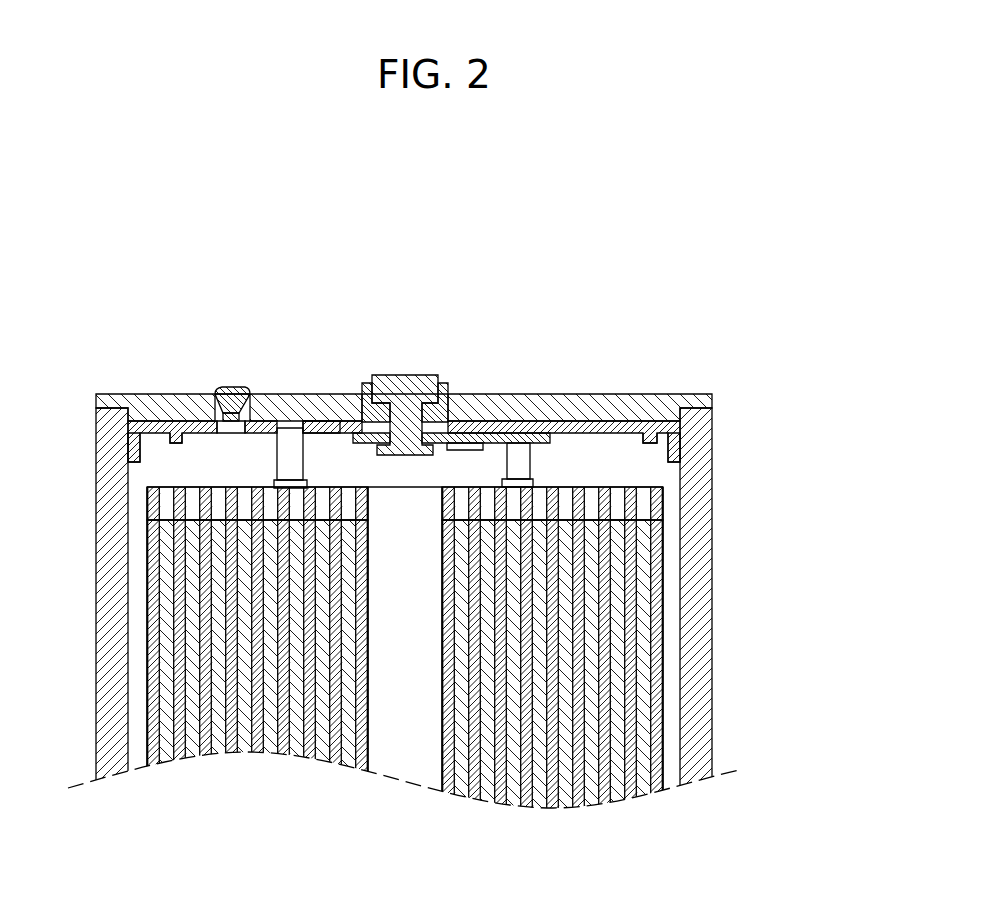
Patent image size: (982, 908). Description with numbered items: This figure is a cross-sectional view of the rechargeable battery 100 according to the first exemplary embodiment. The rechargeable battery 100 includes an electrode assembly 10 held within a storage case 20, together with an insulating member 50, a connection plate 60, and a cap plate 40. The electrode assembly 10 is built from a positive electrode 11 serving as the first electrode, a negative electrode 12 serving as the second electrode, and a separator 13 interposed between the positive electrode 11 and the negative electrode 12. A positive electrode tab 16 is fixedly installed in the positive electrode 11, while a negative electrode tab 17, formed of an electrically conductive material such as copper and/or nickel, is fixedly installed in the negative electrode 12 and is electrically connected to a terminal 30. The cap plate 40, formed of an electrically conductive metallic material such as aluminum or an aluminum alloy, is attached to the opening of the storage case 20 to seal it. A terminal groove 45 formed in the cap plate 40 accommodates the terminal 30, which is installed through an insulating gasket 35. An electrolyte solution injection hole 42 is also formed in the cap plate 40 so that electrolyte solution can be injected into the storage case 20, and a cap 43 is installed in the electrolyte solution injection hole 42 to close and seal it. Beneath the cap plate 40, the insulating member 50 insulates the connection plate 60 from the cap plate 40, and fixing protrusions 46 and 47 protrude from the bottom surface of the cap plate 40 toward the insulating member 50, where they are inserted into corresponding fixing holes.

The rechargeable battery 100 is at (387, 211).
The electrode assembly 10 is at (792, 753).
The positive electrode 11 is at (645, 690).
The negative electrode 12 is at (615, 747).
The separator 13 is at (655, 643).
The positive electrode tab 16 is at (293, 467).
The negative electrode tab 17 is at (535, 466).
The storage case 20 is at (695, 518).
The terminal 30 is at (400, 387).
The insulating gasket 35 is at (443, 395).
The cap plate 40 is at (146, 402).
The electrolyte solution injection hole 42 is at (222, 415).
The cap 43 is at (232, 392).
The terminal groove 45 is at (313, 432).
The fixing protrusion 46 is at (178, 443).
The fixing protrusion 47 is at (657, 445).
The insulating member 50 is at (622, 428).
The connection plate 60 is at (496, 440).